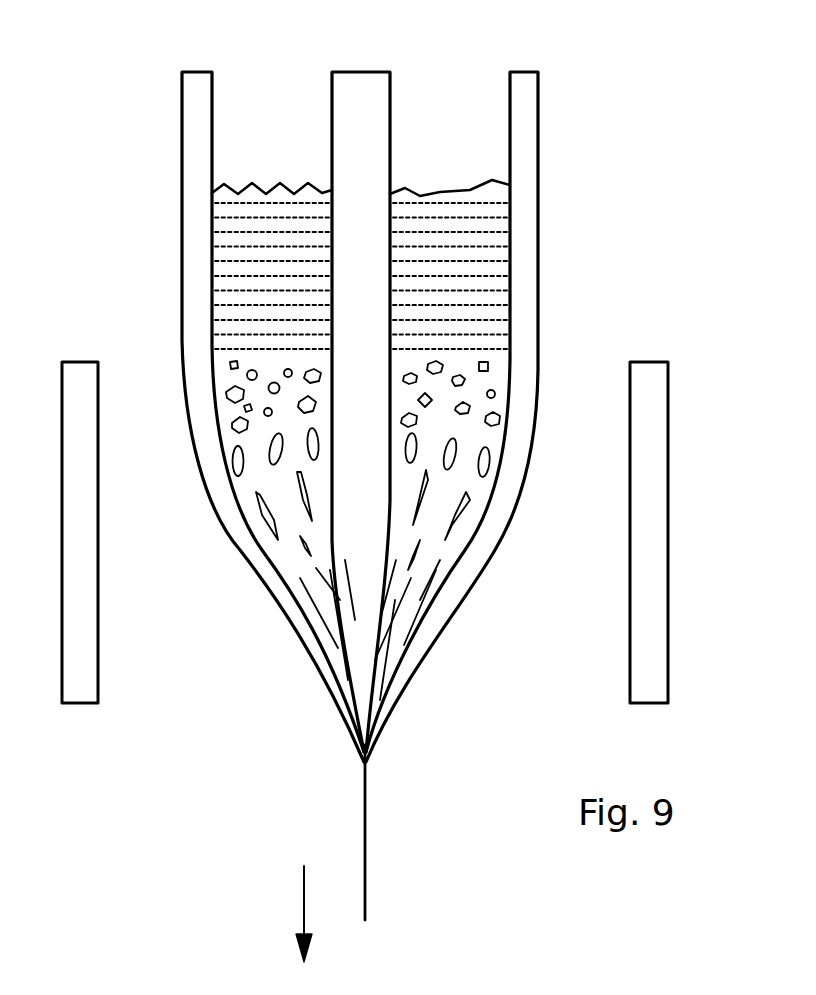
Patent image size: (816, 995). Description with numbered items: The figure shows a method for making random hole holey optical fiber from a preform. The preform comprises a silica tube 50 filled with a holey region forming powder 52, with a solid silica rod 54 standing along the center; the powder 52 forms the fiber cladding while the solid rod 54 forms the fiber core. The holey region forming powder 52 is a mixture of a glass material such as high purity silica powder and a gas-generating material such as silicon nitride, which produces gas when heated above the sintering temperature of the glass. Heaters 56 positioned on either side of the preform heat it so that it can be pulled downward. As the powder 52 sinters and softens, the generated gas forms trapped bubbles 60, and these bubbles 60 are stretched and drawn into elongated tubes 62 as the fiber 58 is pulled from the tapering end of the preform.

The silica tube 50 is at (196, 72).
The solid silica rod 54 is at (363, 90).
The holey region forming powder 52 is at (480, 275).
The trapped bubbles 60 is at (492, 420).
The elongated tubes 62 is at (400, 618).
The heaters 56 is at (78, 362).
The fiber 58 is at (367, 873).